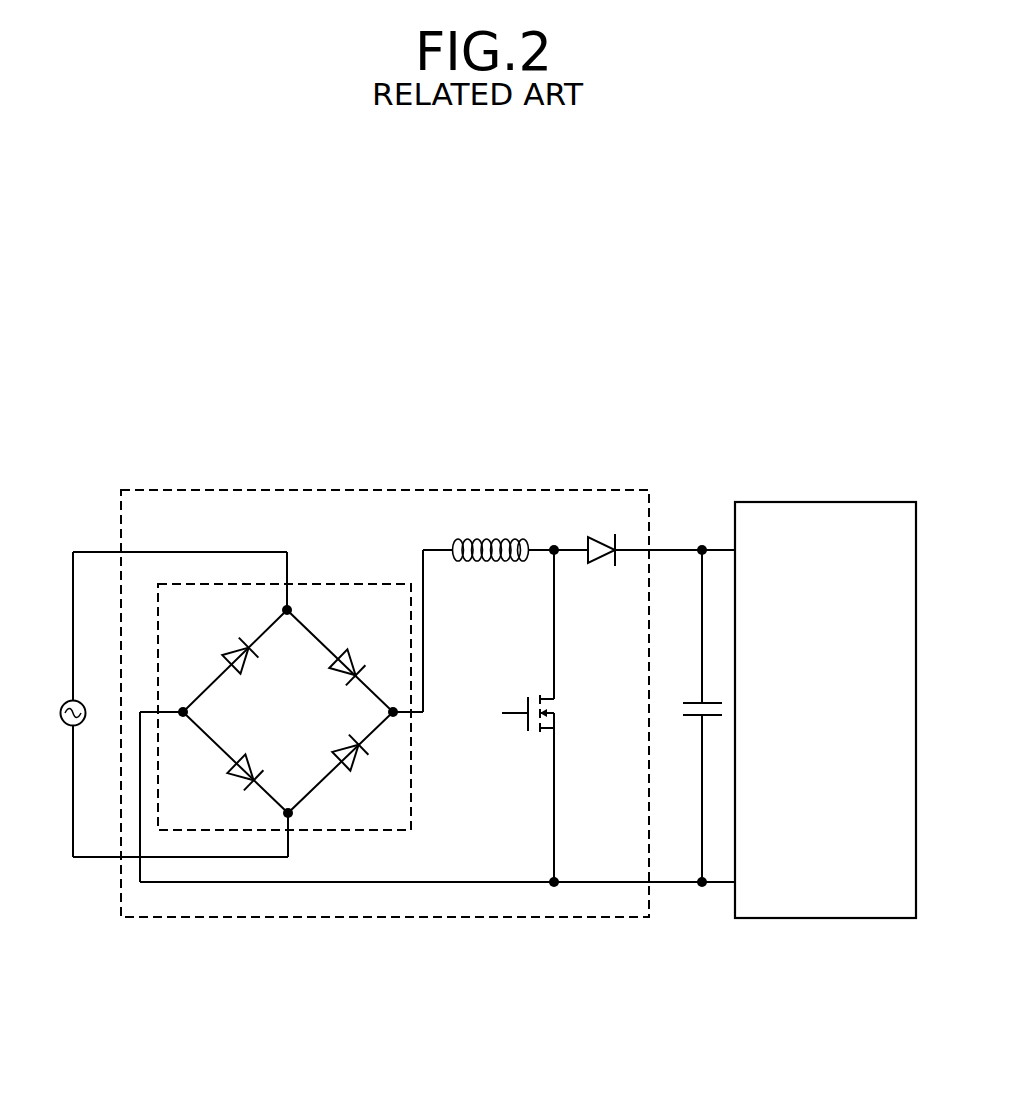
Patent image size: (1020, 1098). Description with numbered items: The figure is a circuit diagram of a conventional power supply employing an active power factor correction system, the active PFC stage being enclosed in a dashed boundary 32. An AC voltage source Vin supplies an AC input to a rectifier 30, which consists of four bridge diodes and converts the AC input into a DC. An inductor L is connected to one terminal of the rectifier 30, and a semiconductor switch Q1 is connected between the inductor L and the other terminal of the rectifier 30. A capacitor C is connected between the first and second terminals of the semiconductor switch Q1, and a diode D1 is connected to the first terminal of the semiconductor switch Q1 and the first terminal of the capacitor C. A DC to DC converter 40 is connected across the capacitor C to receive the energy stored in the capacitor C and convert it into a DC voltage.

The rectifier 30 is at (346, 584).
The power factor correction circuit 32 is at (414, 490).
The DC to DC converter 40 is at (822, 502).
The inductor L is at (504, 534).
The diode D1 is at (628, 536).
The semiconductor switch Q1 is at (550, 716).
The capacitor C is at (689, 716).
The AC voltage source Vin is at (53, 704).